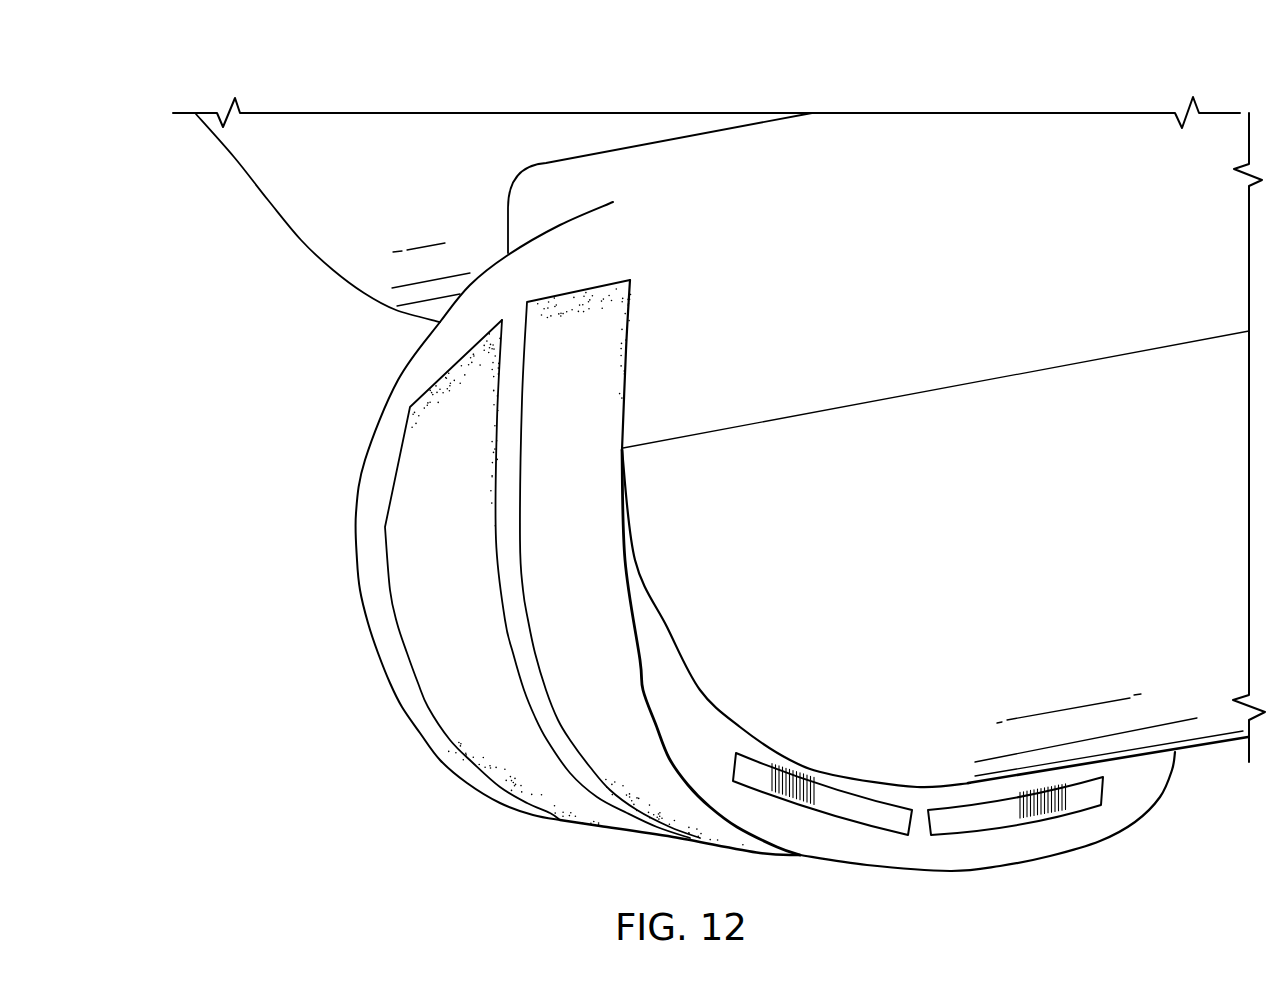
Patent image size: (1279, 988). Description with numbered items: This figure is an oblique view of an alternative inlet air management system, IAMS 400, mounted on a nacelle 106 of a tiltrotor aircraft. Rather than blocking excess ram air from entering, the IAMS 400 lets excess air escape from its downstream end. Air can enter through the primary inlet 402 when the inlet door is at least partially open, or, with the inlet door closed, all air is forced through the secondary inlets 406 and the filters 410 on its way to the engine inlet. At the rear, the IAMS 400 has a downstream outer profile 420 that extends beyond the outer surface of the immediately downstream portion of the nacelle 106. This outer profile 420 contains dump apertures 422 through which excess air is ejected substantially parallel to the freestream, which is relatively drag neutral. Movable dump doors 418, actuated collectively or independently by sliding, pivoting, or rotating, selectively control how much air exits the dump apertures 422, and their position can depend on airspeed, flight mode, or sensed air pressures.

The nacelle 106 is at (407, 80).
The IAMS 400 is at (341, 597).
The primary inlet 402 is at (358, 567).
The secondary inlet 406 is at (397, 629).
The filters 410 is at (462, 718).
The dump door 418 is at (818, 807).
The downstream outer profile 420 is at (918, 853).
The dump apertures 422 is at (855, 822).